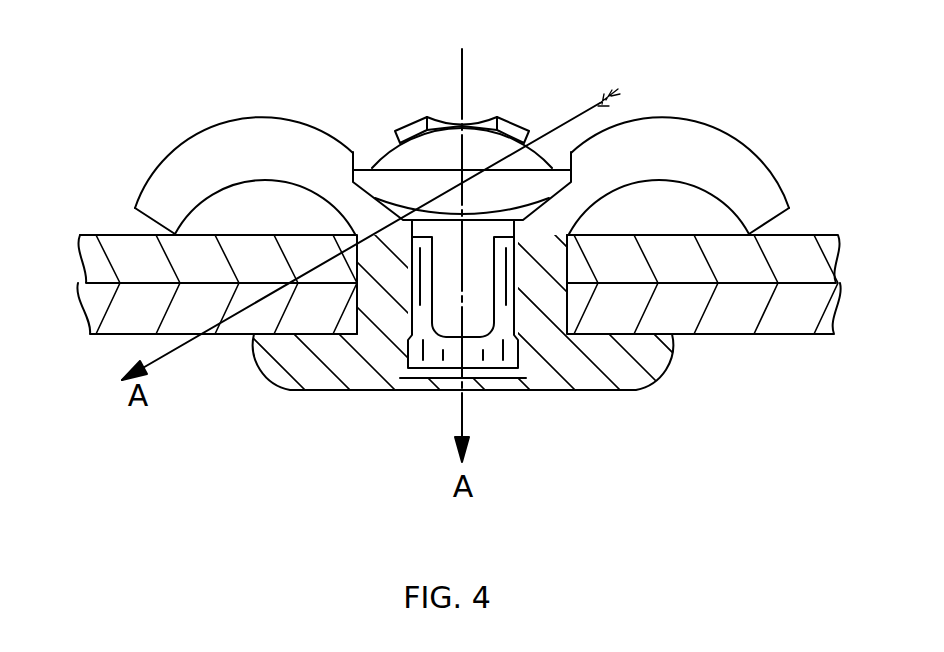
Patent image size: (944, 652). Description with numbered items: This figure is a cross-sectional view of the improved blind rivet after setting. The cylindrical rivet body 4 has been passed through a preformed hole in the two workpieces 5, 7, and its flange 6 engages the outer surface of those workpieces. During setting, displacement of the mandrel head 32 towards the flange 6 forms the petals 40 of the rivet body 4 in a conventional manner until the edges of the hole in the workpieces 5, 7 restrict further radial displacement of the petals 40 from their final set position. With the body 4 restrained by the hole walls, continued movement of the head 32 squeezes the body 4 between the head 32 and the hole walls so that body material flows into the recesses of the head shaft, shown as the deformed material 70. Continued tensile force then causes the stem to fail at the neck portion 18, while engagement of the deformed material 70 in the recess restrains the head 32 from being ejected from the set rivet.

The rivet body 4 is at (548, 311).
The workpiece 5 is at (118, 245).
The flange 6 is at (617, 373).
The workpiece 7 is at (95, 305).
The neck portion 18 is at (438, 367).
The head 32 is at (415, 143).
The petals 40 is at (252, 133).
The deformed material 70 is at (567, 233).